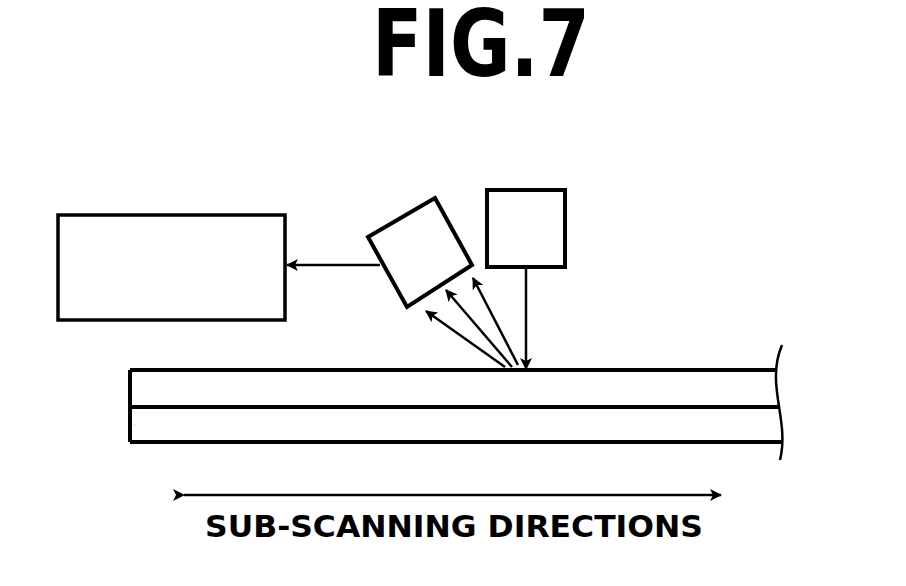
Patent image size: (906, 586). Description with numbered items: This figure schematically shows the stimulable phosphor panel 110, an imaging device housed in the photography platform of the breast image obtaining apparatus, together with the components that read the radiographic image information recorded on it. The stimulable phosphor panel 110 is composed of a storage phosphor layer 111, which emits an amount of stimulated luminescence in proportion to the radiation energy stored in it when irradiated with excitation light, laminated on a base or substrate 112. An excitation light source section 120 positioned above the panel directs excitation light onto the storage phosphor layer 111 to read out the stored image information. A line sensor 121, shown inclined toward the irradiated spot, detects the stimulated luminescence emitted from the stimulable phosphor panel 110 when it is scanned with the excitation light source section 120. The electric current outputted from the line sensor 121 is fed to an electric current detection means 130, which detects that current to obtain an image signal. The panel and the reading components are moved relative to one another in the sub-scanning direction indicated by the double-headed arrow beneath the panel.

The stimulable phosphor panel 110 is at (713, 346).
The storage phosphor layer 111 is at (139, 385).
The base (substrate) 112 is at (139, 425).
The excitation light source section 120 is at (528, 205).
The line sensor 121 is at (405, 230).
The electric current detection means 130 is at (270, 225).